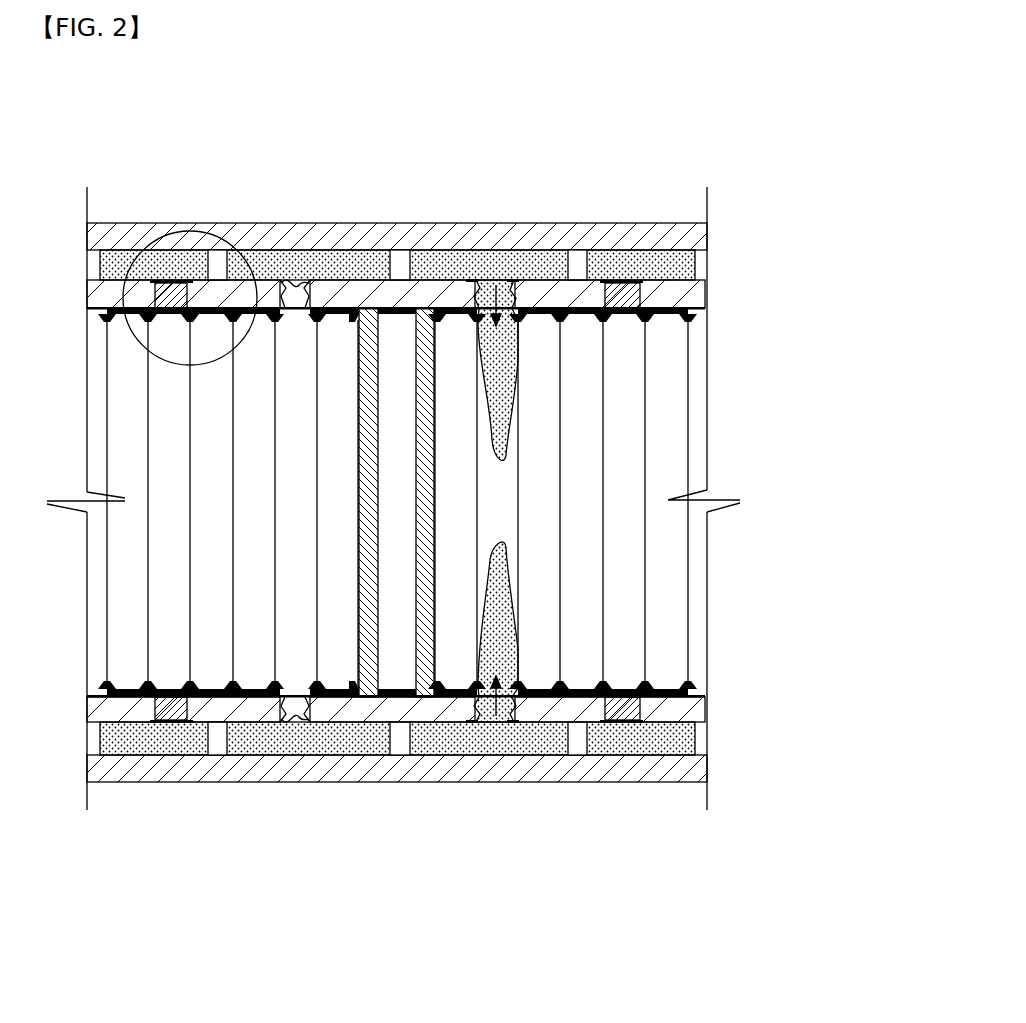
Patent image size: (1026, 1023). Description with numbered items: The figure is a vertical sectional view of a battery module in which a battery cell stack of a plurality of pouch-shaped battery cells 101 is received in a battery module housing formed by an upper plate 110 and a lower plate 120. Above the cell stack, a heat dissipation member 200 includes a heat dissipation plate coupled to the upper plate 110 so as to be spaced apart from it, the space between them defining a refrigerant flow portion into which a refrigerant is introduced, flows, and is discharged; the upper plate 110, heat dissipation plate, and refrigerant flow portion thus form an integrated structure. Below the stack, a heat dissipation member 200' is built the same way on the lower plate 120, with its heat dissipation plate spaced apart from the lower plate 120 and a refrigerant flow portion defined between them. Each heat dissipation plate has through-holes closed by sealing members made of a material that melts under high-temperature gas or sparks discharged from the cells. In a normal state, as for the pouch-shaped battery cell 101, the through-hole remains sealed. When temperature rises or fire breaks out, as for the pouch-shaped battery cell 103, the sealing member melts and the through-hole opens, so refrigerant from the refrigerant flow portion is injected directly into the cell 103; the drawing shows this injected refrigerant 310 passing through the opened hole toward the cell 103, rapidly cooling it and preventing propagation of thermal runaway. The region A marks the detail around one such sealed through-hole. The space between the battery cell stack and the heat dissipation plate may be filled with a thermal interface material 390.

The pouch-shaped battery cell 101 is at (668, 572).
The pouch-shaped battery cell 103 is at (500, 502).
The upper plate 110 is at (333, 223).
The lower plate 120 is at (418, 782).
The heat dissipation member 200 is at (489, 244).
The heat dissipation member 200' is at (489, 809).
The injected thermal resin 310 is at (533, 270).
The thermal interface material 390 is at (660, 690).
The detail region A is at (173, 230).